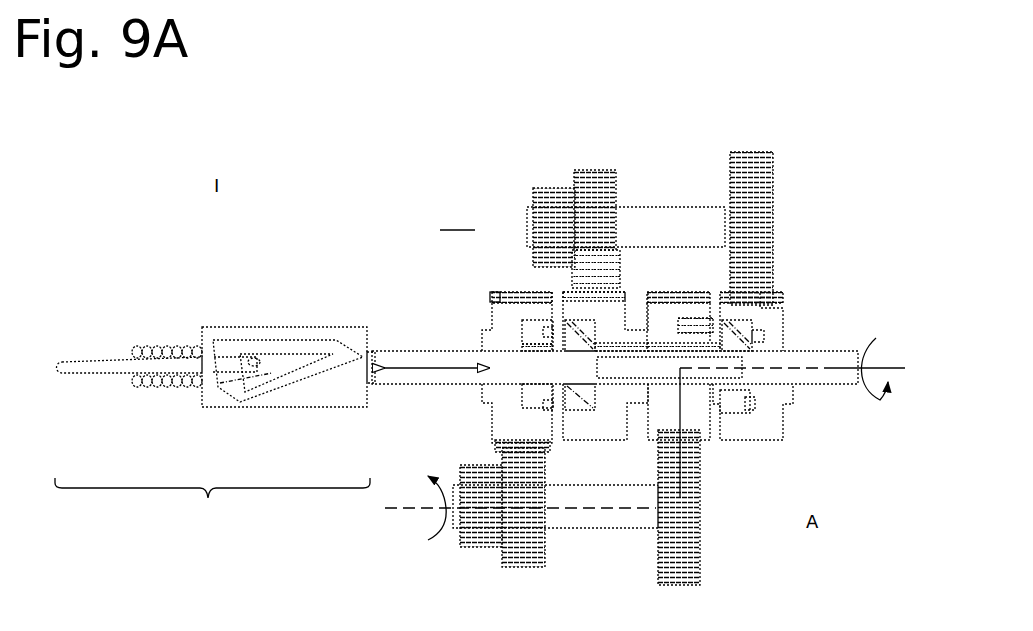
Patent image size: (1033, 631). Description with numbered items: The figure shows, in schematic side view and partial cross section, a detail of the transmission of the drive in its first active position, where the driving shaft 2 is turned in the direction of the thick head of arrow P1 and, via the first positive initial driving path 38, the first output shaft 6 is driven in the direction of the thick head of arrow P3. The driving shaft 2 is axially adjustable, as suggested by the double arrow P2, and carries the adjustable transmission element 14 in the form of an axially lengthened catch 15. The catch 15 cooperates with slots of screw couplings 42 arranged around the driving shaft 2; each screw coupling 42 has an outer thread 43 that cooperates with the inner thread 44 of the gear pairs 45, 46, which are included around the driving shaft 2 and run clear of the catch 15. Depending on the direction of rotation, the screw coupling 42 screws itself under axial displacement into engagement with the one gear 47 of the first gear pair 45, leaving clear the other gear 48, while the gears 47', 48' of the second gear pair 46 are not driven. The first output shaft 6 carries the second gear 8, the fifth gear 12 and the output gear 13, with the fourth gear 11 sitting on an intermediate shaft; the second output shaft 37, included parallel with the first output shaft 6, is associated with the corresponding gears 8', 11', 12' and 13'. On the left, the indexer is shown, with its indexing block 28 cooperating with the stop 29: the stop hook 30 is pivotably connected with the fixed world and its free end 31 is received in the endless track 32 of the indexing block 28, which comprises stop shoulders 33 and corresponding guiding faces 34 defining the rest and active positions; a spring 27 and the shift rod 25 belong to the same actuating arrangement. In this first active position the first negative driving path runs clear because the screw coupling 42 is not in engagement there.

The driving shaft 2 is at (844, 386).
The first output shaft 6 is at (632, 515).
The second gear 8 is at (700, 518).
The second gear 8' is at (774, 225).
The fourth gear 11 is at (501, 420).
The fourth gear 11' is at (614, 269).
The fifth gear 12 is at (523, 525).
The fifth gear 12' is at (590, 189).
The output gear 13 is at (476, 533).
The output gear 13' is at (542, 208).
The adjustable transmission element 14 is at (850, 341).
The catch 15 is at (646, 388).
The shift rod 25 is at (385, 356).
The spring 27 is at (137, 388).
The indexing block 28 is at (194, 404).
The stop 29 is at (108, 344).
The stop hook 30 is at (60, 362).
The free end 31 is at (252, 362).
The endless track 32 is at (340, 352).
The stop shoulders 33 is at (270, 362).
The guiding faces 34 is at (290, 395).
The second output shaft 37 is at (660, 215).
The first positive initial driving path 38 is at (582, 510).
The screw coupling 42 is at (710, 410).
The outer thread 43 is at (703, 300).
The inner thread 44 is at (753, 328).
The first gear pair 45 is at (505, 330).
The second gear pair 46 is at (705, 397).
The gear 47 is at (468, 291).
The gear 47' is at (687, 296).
The gear 48 is at (526, 307).
The gear 48' is at (768, 281).
The arrow P1 is at (869, 369).
The shift direction P2 is at (445, 372).
The arrow P3 is at (421, 508).